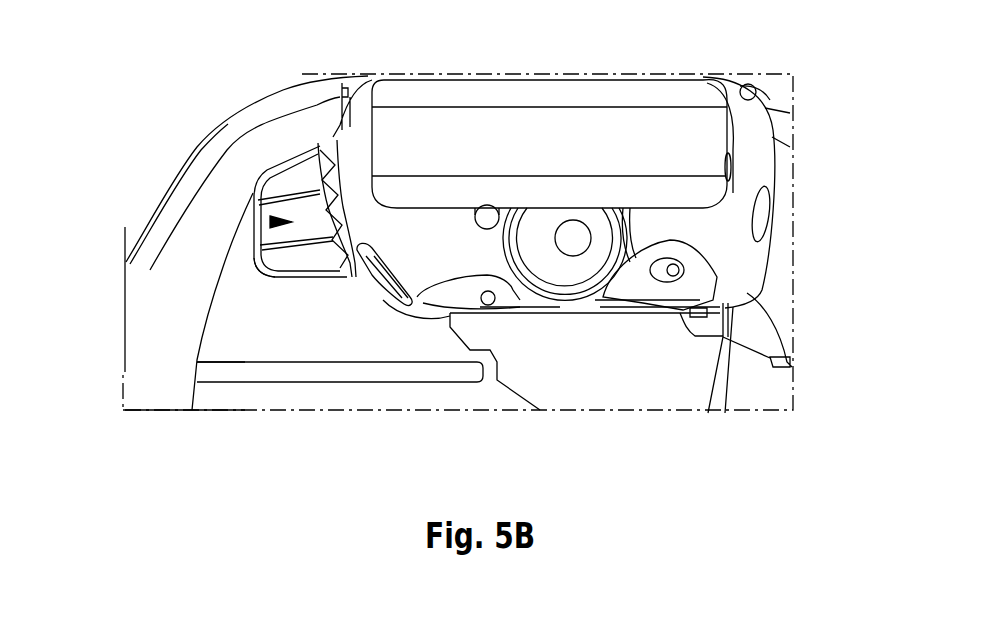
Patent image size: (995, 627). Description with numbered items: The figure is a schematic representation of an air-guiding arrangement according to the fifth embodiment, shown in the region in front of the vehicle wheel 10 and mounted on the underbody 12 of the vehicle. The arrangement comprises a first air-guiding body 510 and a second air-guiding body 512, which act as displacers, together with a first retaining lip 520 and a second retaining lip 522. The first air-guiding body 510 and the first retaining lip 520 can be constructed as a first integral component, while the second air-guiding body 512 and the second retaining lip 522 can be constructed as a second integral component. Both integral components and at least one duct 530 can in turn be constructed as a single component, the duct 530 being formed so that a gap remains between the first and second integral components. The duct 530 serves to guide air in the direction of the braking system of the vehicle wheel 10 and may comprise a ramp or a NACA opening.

The vehicle wheel 10 is at (655, 127).
The underbody 12 is at (247, 393).
The first air-guiding body 510 is at (277, 197).
The second air-guiding body 512 is at (293, 263).
The first retaining lip 520 is at (322, 157).
The second retaining lip 522 is at (341, 283).
The duct 530 is at (272, 222).